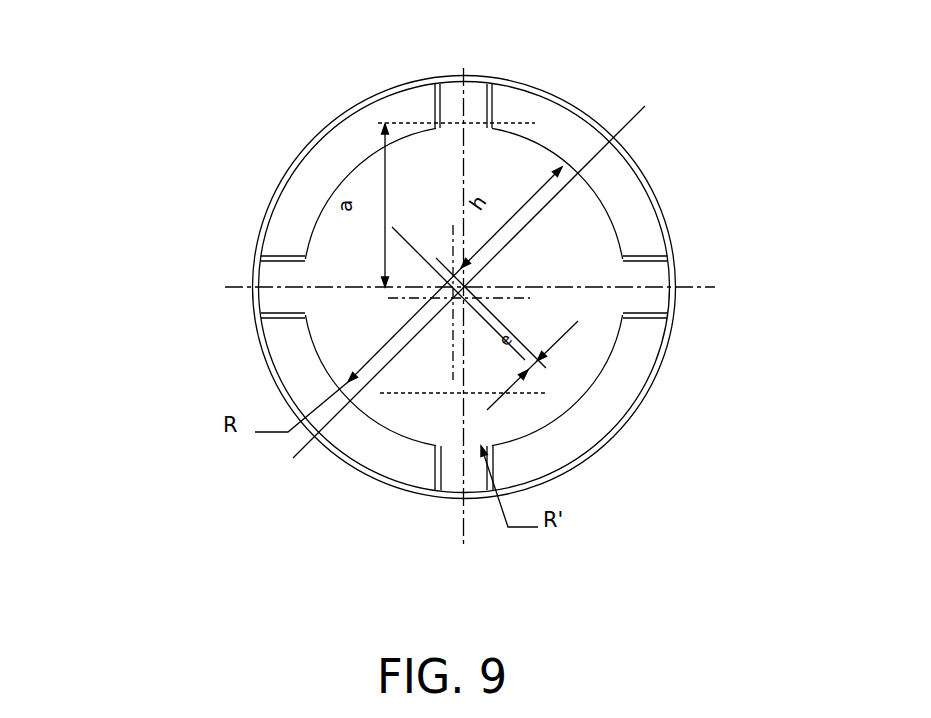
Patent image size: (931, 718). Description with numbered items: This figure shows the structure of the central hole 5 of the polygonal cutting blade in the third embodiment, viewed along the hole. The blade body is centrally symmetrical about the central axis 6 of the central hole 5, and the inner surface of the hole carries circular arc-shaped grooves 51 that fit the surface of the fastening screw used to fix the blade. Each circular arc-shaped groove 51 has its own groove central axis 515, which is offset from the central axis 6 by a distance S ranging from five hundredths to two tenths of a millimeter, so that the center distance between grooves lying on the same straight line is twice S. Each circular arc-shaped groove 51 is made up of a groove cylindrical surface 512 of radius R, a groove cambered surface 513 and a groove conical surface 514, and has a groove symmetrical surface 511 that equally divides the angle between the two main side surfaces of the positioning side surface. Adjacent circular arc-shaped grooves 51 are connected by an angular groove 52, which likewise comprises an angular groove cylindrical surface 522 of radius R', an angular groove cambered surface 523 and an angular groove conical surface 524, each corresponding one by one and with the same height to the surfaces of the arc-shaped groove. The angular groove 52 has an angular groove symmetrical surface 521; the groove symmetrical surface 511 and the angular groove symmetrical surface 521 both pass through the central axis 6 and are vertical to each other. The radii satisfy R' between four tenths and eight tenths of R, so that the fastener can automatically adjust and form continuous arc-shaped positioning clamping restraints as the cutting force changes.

The central hole 5 is at (437, 306).
The circular arc-shaped groove 51 is at (532, 307).
The groove symmetrical surface 511 is at (685, 156).
The groove cylindrical surface 512 is at (530, 332).
The groove cambered surface 513 is at (511, 296).
The groove conical surface 514 is at (512, 287).
The groove central axis 515 is at (347, 198).
The angular groove 52 is at (365, 339).
The angular groove symmetrical surface 521 is at (411, 520).
The angular groove cylindrical surface 522 is at (211, 364).
The angular groove cambered surface 523 is at (302, 262).
The angular groove conical surface 524 is at (390, 333).
The central axis 6 is at (485, 306).